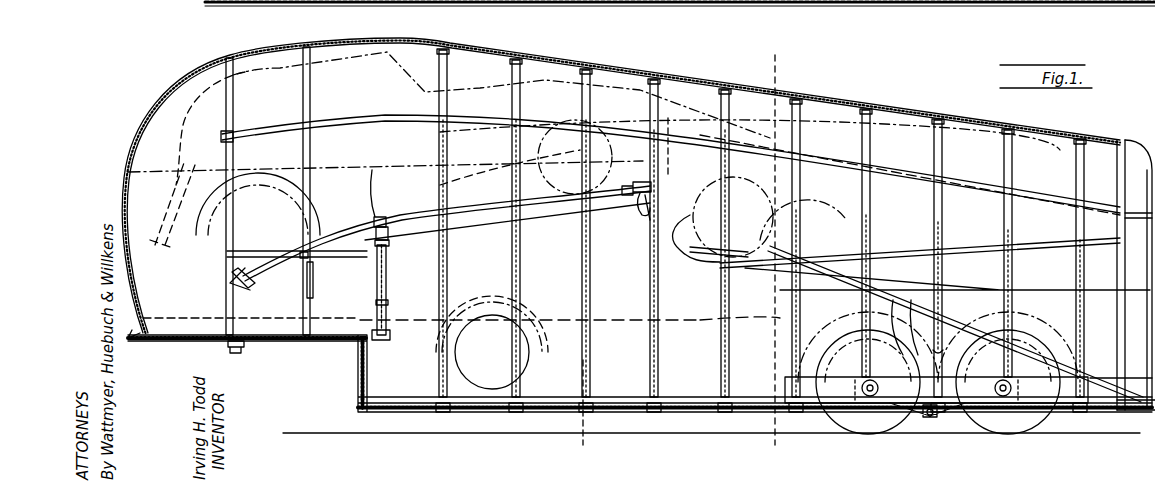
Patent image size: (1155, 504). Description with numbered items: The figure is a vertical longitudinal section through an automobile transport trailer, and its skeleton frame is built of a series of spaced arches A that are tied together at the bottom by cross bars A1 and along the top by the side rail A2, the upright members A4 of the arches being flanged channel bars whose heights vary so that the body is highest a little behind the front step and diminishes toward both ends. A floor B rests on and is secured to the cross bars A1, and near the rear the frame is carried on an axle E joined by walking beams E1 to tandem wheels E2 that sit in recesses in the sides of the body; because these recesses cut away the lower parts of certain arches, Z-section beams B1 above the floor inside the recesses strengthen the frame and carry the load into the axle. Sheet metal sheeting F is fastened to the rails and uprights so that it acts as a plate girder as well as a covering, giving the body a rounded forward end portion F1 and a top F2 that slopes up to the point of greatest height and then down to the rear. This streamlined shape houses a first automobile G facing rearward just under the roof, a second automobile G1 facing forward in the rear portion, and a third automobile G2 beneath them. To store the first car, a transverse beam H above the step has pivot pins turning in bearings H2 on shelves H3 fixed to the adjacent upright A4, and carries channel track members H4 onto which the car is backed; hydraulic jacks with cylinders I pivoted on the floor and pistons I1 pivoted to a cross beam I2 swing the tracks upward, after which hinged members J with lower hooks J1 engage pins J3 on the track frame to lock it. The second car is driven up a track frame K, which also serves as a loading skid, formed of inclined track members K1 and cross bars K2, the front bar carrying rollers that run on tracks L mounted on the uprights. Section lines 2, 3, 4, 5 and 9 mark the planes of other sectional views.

The arches A is at (803, 110).
The cross bars A1 is at (655, 316).
The top side rail A2 is at (962, 180).
The upright members A4 is at (605, 6).
The floor B is at (680, 413).
The beams B1 is at (938, 390).
The axle E is at (945, 420).
The walking beams E1 is at (909, 412).
The tandem wheels E2 is at (862, 433).
The sheet metal sheeting F is at (545, 6).
The rounded forward end portion F1 is at (176, 88).
The top F2 is at (657, 64).
The automobile G is at (278, 58).
The automobile G1 is at (971, 135).
The automobile G2 is at (696, 230).
The transversely extending beam H is at (297, 262).
The bearings H2 is at (345, 6).
The shelves H3 is at (235, 6).
The track members H4 is at (243, 273).
The cylinders I is at (388, 6).
The pistons I1 is at (390, 268).
The cross beam I2 is at (372, 172).
The hinged members J is at (636, 238).
The lower hooks J1 is at (246, 345).
The pins J3 is at (628, 213).
The track frame K is at (920, 302).
The track members K1 is at (900, 292).
The cross bars K2 is at (747, 247).
The tracks L is at (903, 6).
The section line 2 is at (110, 165).
The section line 3 is at (778, 55).
The section line 4 is at (293, 220).
The section line 5 is at (668, 140).
The section line 9 is at (583, 380).